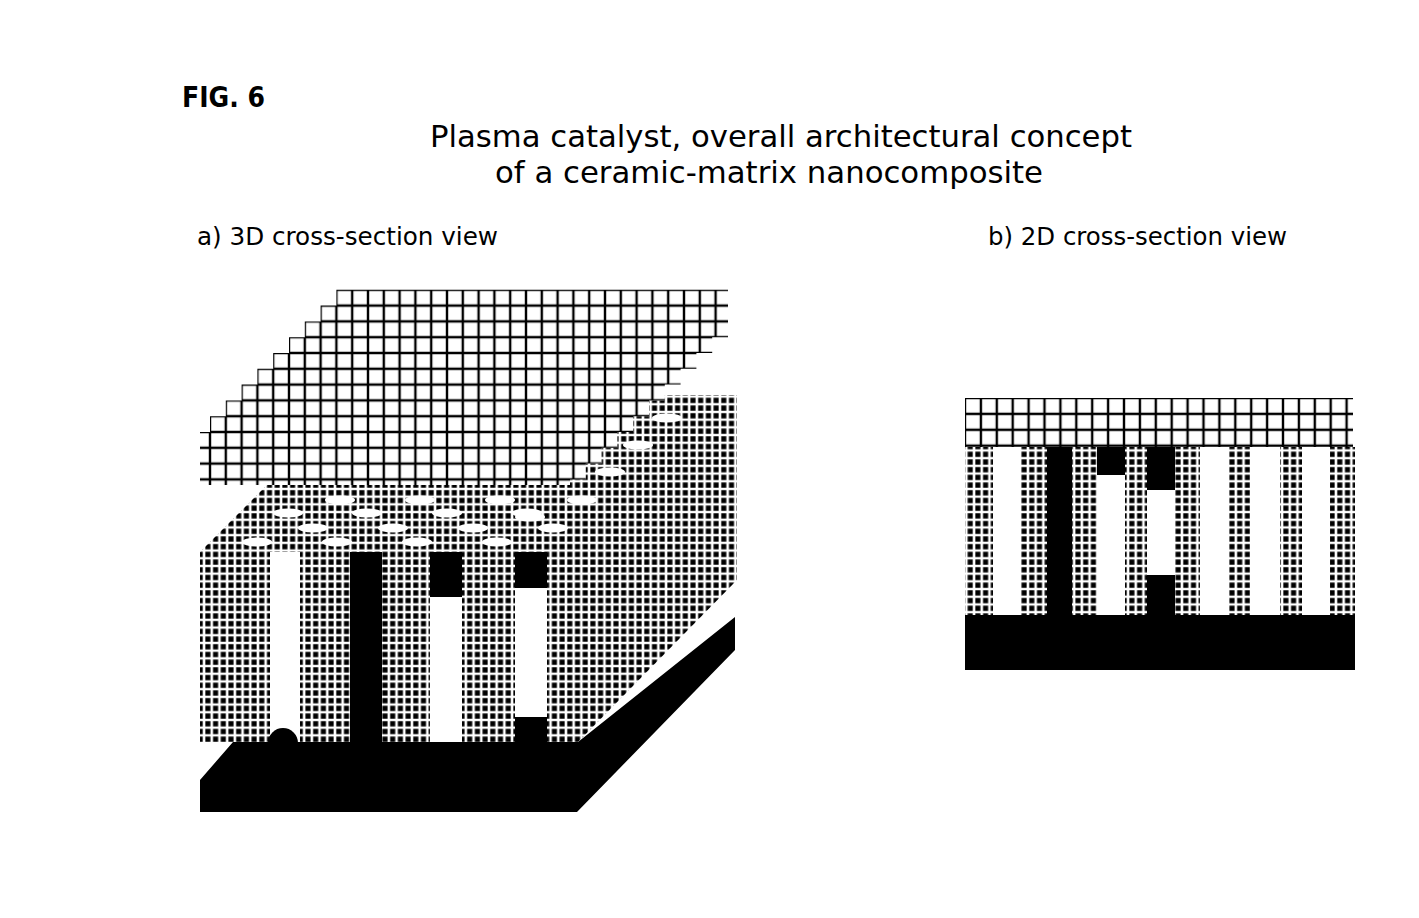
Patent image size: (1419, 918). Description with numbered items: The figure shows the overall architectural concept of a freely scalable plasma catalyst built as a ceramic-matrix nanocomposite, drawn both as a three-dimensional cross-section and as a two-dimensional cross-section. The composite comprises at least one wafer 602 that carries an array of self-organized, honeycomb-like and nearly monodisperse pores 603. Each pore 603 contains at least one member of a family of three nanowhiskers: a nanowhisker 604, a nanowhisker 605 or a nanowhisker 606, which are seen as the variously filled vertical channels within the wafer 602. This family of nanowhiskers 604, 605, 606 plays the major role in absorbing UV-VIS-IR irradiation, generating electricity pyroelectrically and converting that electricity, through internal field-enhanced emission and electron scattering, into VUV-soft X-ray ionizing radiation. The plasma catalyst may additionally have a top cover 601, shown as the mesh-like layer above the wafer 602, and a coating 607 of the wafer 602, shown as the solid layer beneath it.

The top cover 601 is at (948, 407).
The wafer 602 is at (950, 540).
The pores 603 is at (280, 745).
The nanowhisker 604 is at (365, 745).
The nanowhisker 605 is at (440, 753).
The nanowhisker 606 is at (525, 745).
The coating 607 is at (950, 633).